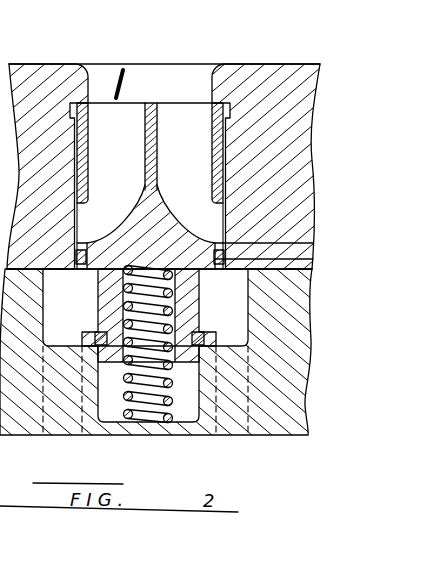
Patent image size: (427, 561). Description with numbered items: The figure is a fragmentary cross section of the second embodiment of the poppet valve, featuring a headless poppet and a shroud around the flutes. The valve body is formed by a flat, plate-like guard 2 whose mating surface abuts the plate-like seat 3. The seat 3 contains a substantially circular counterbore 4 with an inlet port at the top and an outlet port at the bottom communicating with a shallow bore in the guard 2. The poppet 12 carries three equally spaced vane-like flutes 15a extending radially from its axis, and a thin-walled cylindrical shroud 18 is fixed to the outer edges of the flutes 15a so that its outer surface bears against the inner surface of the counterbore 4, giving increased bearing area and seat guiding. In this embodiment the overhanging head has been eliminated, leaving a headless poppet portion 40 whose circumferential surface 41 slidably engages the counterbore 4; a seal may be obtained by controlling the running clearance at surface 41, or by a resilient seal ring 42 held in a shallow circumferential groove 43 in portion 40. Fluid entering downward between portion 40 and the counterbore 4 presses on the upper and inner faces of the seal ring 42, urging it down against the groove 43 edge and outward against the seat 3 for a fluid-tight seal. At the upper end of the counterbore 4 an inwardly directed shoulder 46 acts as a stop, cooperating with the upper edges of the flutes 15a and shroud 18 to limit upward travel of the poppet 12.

The guard 2 is at (301, 328).
The seat 3 is at (298, 92).
The counterbore 4 is at (218, 64).
The poppet 12 is at (123, 68).
The flutes 15a is at (150, 103).
The shroud 18 is at (163, 107).
The headless poppet portion 40 is at (115, 233).
The circumferential surface 41 is at (313, 243).
The seal ring 42 is at (313, 259).
The circumferential groove 43 is at (206, 258).
The shoulder 46 is at (79, 100).